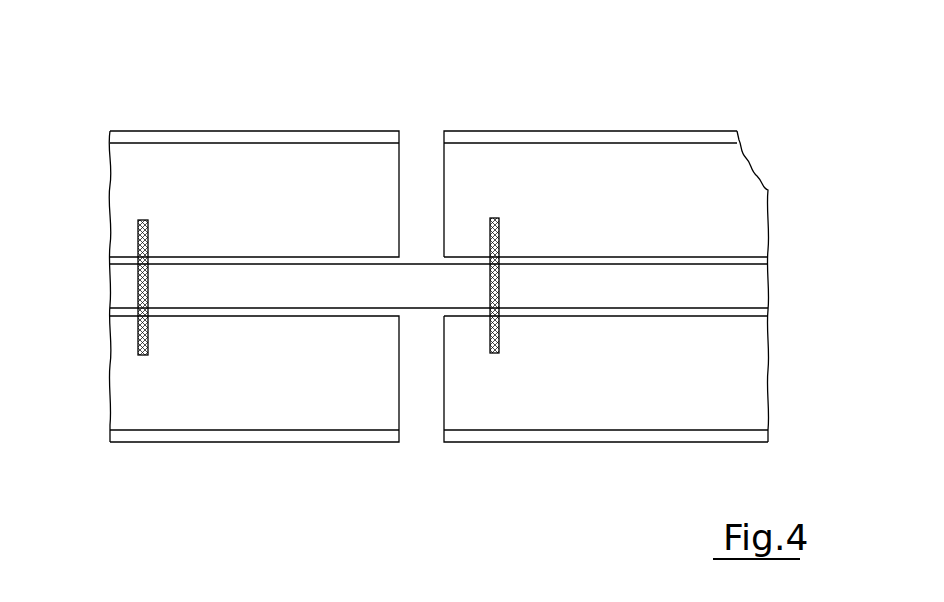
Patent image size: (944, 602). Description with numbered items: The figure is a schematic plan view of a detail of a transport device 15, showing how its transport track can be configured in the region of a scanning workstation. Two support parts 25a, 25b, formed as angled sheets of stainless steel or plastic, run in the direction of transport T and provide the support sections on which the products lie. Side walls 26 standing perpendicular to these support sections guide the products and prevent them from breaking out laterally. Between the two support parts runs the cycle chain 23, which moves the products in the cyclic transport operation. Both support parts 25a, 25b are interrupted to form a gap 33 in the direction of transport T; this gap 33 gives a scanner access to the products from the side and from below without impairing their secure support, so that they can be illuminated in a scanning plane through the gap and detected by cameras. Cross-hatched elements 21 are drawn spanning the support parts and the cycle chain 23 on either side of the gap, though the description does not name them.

The transport device 15 is at (107, 95).
The sealing element 21 is at (147, 340).
The cycle chain 23 is at (755, 283).
The support part 25a is at (762, 143).
The support part 25b is at (782, 398).
The side wall 26 is at (618, 137).
The gap 33 is at (421, 462).
The direction of transport T is at (255, 512).